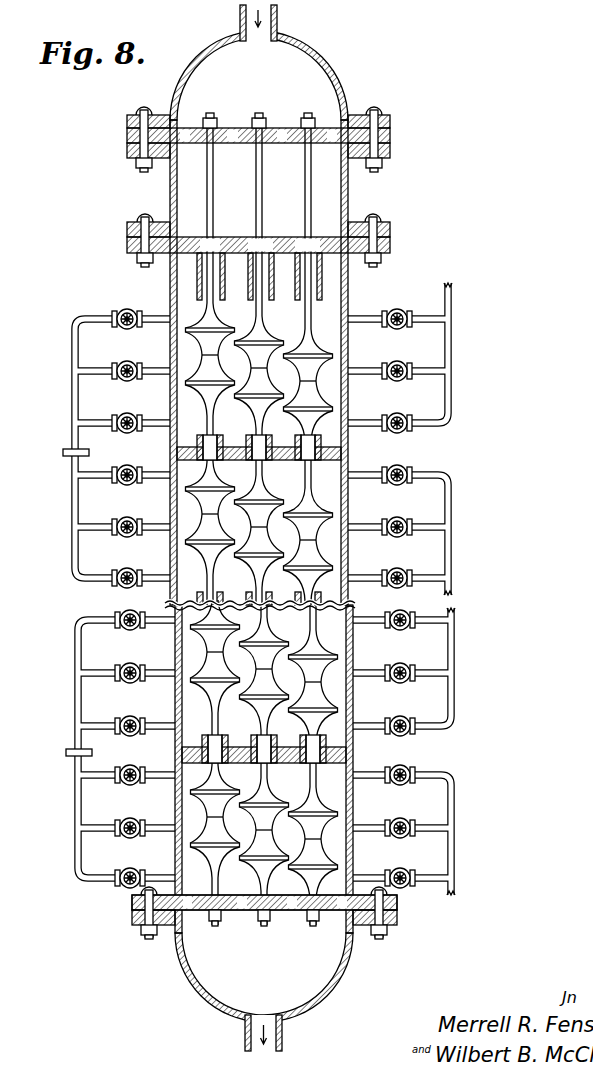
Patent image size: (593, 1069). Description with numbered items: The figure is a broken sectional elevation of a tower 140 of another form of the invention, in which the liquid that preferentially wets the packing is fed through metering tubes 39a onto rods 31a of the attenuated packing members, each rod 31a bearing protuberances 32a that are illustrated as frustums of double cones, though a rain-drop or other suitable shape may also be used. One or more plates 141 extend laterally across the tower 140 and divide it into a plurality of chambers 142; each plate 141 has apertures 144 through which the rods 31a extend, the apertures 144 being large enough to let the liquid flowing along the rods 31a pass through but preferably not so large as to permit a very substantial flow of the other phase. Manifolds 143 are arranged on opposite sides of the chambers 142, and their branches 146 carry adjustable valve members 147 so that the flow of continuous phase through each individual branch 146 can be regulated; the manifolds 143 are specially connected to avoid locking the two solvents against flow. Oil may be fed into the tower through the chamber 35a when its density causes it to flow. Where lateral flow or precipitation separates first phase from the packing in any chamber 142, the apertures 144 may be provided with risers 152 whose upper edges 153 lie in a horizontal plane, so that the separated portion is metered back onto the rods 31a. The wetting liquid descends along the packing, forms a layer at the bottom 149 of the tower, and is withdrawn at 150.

The chamber 35a is at (318, 76).
The rods 31a is at (308, 208).
The metering tubes 39a is at (274, 285).
The protuberances 32a is at (305, 338).
The risers 152 is at (226, 440).
The upper edges 153 is at (296, 437).
The plates 141 is at (178, 452).
The chambers 142 is at (348, 452).
The apertures 144 is at (266, 466).
The tower 140 is at (447, 455).
The manifolds 143 is at (456, 353).
The branches 146 is at (100, 582).
The adjustable valve members 147 is at (133, 563).
The bottom 149 is at (197, 960).
The withdrawal point 150 is at (247, 1026).